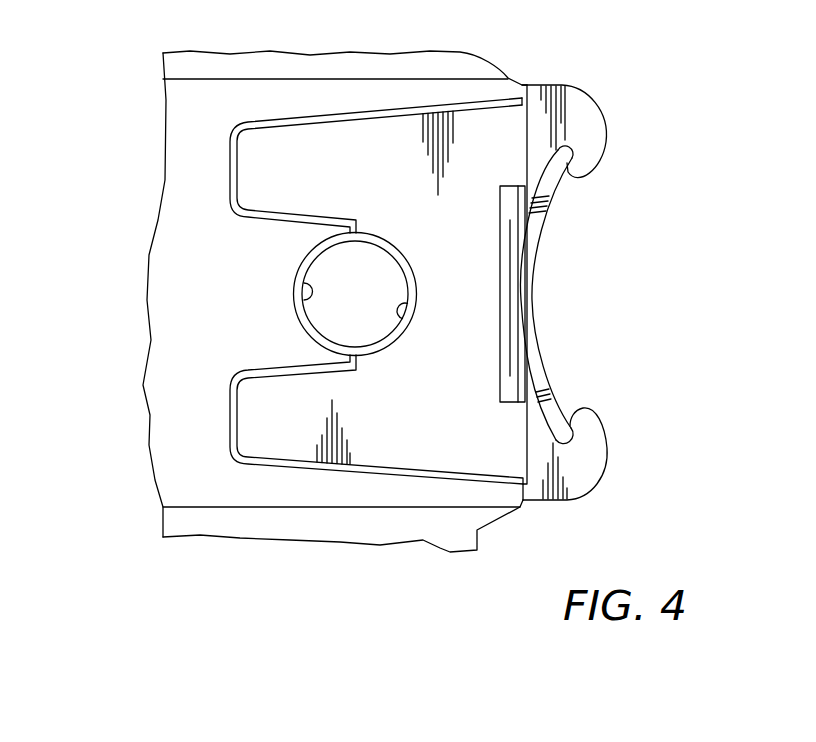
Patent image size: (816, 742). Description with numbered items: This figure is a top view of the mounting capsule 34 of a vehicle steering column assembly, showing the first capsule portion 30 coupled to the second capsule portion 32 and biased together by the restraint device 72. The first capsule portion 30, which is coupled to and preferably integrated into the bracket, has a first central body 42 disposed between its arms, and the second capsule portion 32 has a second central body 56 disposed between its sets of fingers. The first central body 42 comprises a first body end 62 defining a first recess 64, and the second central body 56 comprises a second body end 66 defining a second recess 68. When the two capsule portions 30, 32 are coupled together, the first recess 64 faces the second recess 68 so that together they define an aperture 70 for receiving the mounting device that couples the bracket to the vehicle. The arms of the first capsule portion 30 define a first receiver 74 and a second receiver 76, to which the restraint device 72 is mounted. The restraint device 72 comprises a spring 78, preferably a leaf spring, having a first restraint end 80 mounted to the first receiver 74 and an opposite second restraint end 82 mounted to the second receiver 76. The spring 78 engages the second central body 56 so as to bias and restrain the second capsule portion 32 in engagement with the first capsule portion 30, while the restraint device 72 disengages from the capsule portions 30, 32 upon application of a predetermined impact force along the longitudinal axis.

The first capsule portion 30 is at (222, 307).
The second capsule portion 32 is at (250, 168).
The mounting capsule 34 is at (595, 500).
The first central body 42 is at (277, 352).
The second central body 56 is at (463, 293).
The first body end 62 is at (330, 232).
The first recess 64 is at (304, 283).
The second body end 66 is at (380, 358).
The second recess 68 is at (402, 316).
The aperture 70 is at (369, 305).
The restraint device 72 is at (566, 262).
The first receiver 74 is at (607, 140).
The second receiver 76 is at (604, 450).
The spring 78 is at (558, 227).
The first restraint end 80 is at (566, 150).
The second restraint end 82 is at (566, 431).